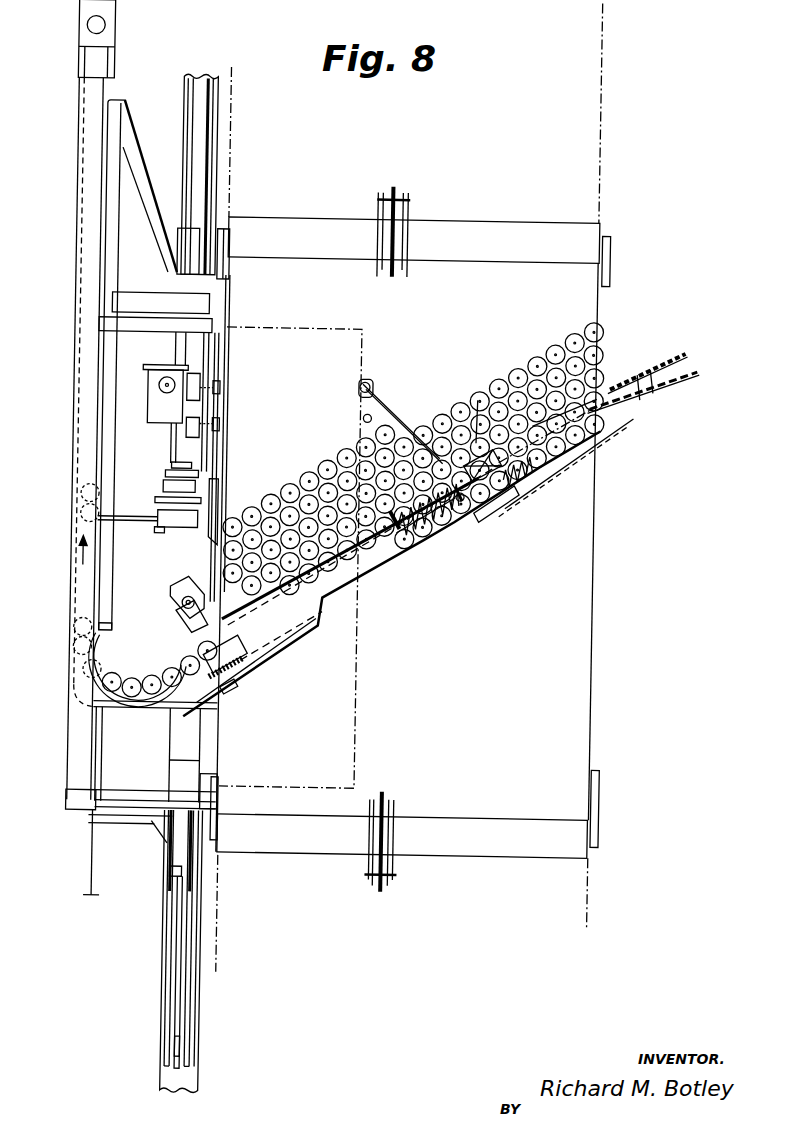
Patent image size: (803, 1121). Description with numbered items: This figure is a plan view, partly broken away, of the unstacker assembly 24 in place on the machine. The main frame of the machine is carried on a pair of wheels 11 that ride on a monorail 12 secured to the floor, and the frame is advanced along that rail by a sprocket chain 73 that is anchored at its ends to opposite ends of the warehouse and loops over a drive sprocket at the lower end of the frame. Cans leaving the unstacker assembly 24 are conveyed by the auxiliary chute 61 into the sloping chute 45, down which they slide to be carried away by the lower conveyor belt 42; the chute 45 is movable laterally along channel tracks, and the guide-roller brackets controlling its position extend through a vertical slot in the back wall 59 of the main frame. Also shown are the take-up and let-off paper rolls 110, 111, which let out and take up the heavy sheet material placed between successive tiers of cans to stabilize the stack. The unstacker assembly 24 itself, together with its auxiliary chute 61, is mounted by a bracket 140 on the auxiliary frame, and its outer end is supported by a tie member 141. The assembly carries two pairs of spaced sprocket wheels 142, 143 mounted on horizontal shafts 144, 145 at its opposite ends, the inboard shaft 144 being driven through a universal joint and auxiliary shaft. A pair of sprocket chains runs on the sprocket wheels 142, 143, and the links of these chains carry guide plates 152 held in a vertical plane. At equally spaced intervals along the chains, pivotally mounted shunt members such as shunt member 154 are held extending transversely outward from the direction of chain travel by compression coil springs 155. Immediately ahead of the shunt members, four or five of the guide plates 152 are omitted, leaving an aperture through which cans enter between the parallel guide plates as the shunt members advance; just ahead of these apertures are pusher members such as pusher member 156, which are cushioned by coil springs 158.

The wheels 11 is at (193, 244).
The monorail 12 is at (195, 1054).
The unstacker assembly 24 is at (307, 641).
The lower conveyor belt 42 is at (97, 31).
The sloping chute 45 is at (80, 142).
The back wall 59 is at (104, 188).
The auxiliary chute 61 is at (122, 659).
The sprocket chain 73 is at (190, 956).
The take-up paper roll 110 is at (501, 231).
The let-off paper roll 111 is at (490, 850).
The bracket 140 is at (212, 614).
The tie member 141 is at (408, 425).
The sprocket wheels 142 is at (232, 692).
The sprocket wheels 143 is at (685, 373).
The horizontal shaft 144 is at (183, 657).
The horizontal shaft 145 is at (628, 418).
The guide plates 152 is at (595, 445).
The shunt member 154 is at (508, 536).
The compression coil springs 155 is at (527, 487).
The pusher member 156 is at (404, 552).
The coil springs 158 is at (443, 537).